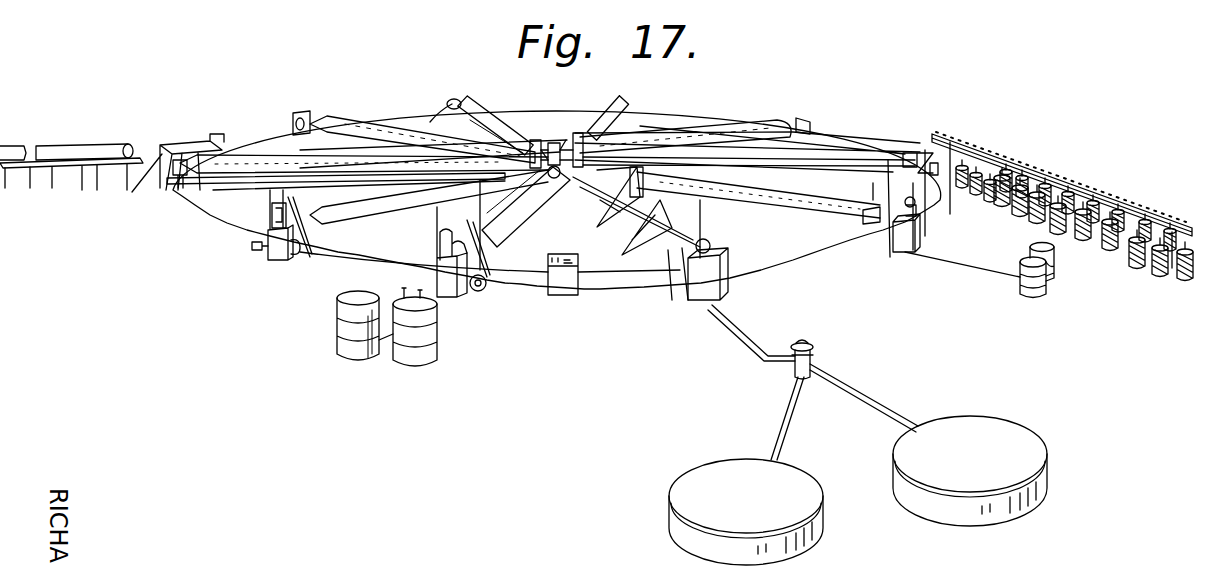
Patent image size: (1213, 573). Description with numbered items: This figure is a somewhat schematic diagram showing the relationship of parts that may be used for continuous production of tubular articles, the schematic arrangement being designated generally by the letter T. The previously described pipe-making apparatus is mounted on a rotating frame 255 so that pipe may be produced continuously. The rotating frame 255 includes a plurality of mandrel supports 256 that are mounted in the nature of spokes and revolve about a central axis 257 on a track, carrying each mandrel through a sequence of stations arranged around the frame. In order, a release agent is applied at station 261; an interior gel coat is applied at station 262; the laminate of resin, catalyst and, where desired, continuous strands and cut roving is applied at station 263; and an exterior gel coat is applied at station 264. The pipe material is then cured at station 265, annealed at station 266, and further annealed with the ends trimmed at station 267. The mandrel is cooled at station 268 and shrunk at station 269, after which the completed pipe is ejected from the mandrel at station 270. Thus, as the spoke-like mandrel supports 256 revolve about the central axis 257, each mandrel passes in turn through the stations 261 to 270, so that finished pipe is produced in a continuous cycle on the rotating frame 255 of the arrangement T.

The rotating frame 255 is at (725, 94).
The mandrel supports 256 is at (364, 128).
The central axis 257 is at (587, 100).
The release agent station 261 is at (275, 266).
The interior gel coat station 262 is at (482, 300).
The laminate station 263 is at (735, 300).
The exterior gel coat station 264 is at (896, 262).
The curing station 265 is at (922, 142).
The annealing station 266 is at (808, 118).
The further annealing and trimming station 267 is at (633, 98).
The mandrel cooling station 268 is at (456, 100).
The mandrel shrinking station 269 is at (318, 104).
The ejection station 270 is at (196, 122).
The schematic arrangement T is at (1059, 167).